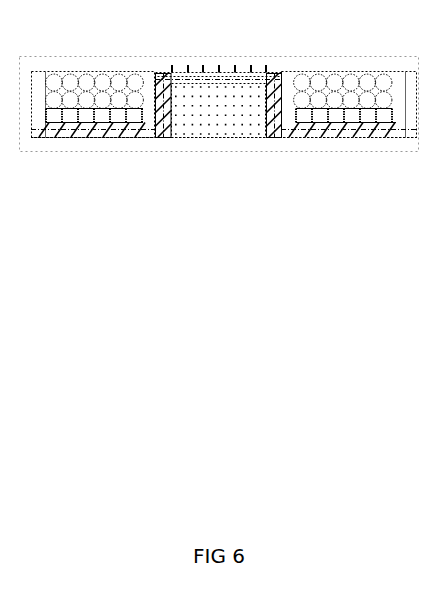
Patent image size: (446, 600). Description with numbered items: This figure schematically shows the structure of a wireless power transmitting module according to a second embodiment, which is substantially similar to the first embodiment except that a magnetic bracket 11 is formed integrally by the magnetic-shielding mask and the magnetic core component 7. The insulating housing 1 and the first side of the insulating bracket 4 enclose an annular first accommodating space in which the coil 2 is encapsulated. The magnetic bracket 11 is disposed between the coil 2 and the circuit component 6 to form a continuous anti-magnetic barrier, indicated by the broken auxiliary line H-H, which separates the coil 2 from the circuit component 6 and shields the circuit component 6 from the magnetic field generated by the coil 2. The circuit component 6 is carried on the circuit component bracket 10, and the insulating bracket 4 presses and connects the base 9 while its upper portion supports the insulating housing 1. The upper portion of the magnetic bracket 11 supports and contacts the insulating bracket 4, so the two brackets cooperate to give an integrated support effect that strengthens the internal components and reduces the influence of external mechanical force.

The insulating housing 1 is at (267, 63).
The coil 2 is at (69, 84).
The insulating bracket 4 is at (203, 72).
The circuit component 6 is at (215, 118).
The magnetic core component 7 is at (336, 136).
The base 9 is at (261, 138).
The circuit component bracket 10 is at (173, 137).
The magnetic bracket 11 is at (105, 137).